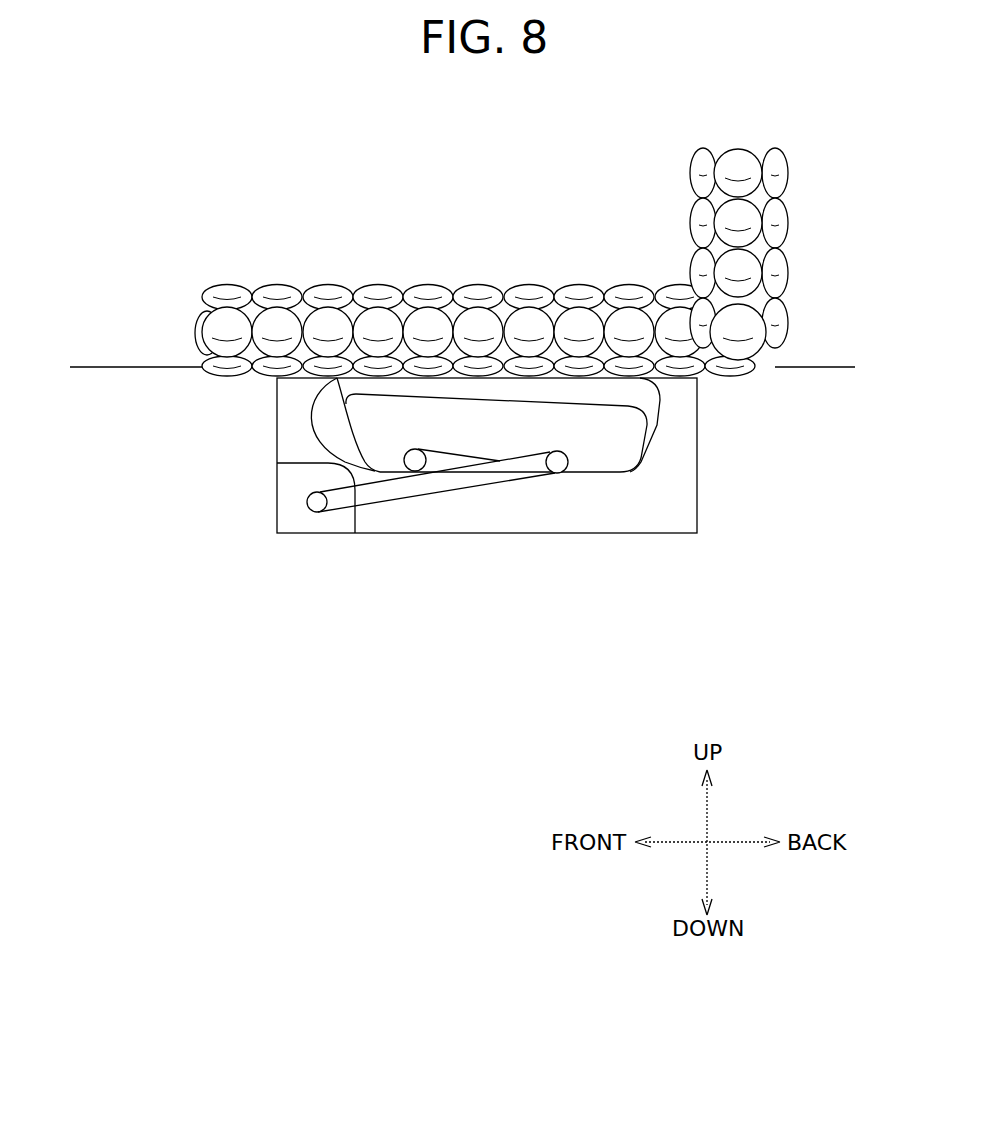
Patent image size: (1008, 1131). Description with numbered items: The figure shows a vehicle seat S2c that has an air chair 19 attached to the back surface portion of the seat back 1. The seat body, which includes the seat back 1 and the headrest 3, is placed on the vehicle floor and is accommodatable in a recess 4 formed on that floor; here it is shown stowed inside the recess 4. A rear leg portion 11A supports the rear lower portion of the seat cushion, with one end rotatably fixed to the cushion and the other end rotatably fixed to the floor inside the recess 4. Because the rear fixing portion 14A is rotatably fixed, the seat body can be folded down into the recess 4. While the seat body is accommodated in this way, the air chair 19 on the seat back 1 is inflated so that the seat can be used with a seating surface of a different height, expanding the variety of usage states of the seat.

The vehicle seat S2c is at (210, 178).
The air chair 19 is at (485, 322).
The seat back 1 is at (647, 397).
The headrest 3 is at (325, 435).
The recess 4 is at (638, 503).
The rear leg portion 11A is at (392, 492).
The rear fixing portion 14A is at (297, 517).